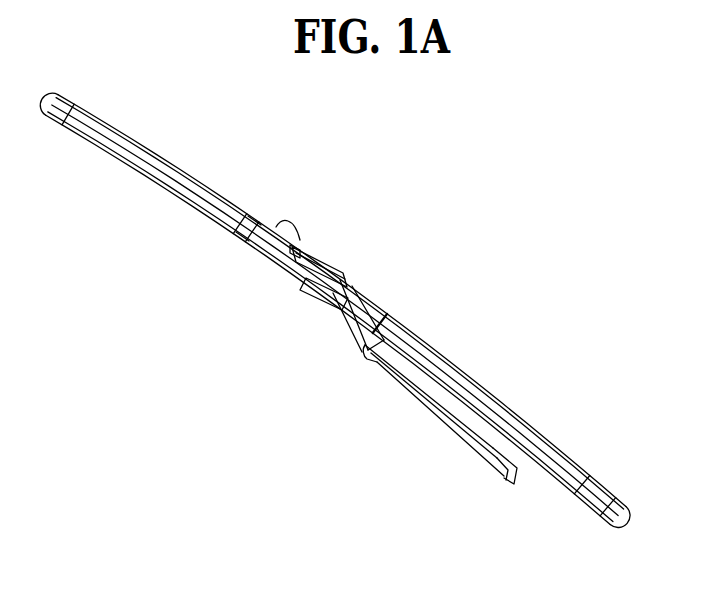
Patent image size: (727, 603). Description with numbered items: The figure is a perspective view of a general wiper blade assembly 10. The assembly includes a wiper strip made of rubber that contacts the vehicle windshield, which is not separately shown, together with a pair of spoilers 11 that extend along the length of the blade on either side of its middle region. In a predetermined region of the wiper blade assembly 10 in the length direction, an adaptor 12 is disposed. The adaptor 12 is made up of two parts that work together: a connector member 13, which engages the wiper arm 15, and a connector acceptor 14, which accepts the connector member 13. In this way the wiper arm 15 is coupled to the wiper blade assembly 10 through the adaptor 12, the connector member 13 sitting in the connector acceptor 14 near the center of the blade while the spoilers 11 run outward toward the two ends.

The wiper blade assembly 10 is at (396, 195).
The spoilers 11 is at (158, 150).
The adaptor 12 is at (363, 278).
The connector member 13 is at (313, 285).
The connector acceptor 14 is at (297, 240).
The wiper arm 15 is at (420, 398).